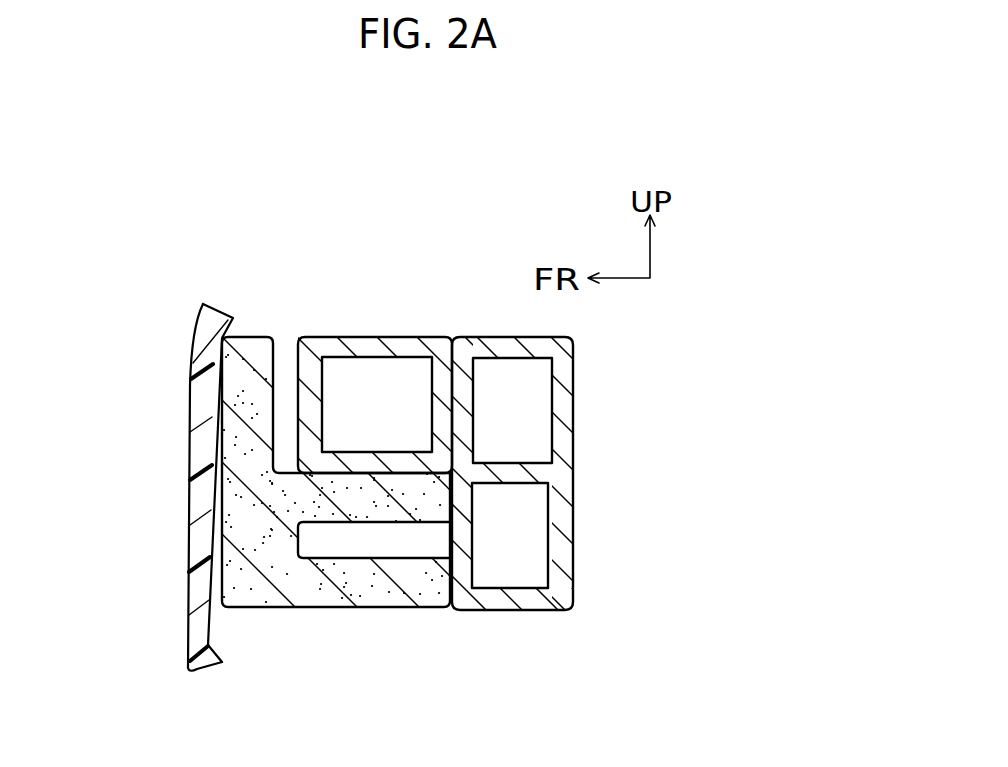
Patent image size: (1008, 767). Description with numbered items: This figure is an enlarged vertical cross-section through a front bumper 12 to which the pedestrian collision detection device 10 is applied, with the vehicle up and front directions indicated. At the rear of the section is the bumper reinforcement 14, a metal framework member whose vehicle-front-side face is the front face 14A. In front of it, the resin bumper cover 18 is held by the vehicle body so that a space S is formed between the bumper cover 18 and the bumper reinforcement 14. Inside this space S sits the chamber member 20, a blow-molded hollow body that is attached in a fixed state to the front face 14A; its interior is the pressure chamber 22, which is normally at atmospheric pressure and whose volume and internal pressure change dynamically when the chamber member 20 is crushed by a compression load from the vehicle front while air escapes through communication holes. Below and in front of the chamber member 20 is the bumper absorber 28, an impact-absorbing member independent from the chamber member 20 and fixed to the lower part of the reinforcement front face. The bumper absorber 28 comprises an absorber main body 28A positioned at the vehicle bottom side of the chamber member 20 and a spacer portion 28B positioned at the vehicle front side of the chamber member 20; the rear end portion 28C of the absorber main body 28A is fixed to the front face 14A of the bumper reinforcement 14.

The pedestrian collision detection device 10 is at (756, 467).
The front bumper 12 is at (145, 319).
The bumper reinforcement 14 is at (589, 420).
The front face 14A is at (446, 369).
The bumper cover 18 is at (176, 509).
The chamber member 20 is at (385, 330).
The pressure chamber 22 is at (392, 422).
The bumper absorber 28 is at (360, 627).
The absorber main body 28A is at (392, 608).
The spacer portion 28B is at (276, 393).
The rear end portion 28C is at (455, 583).
The space S is at (329, 661).